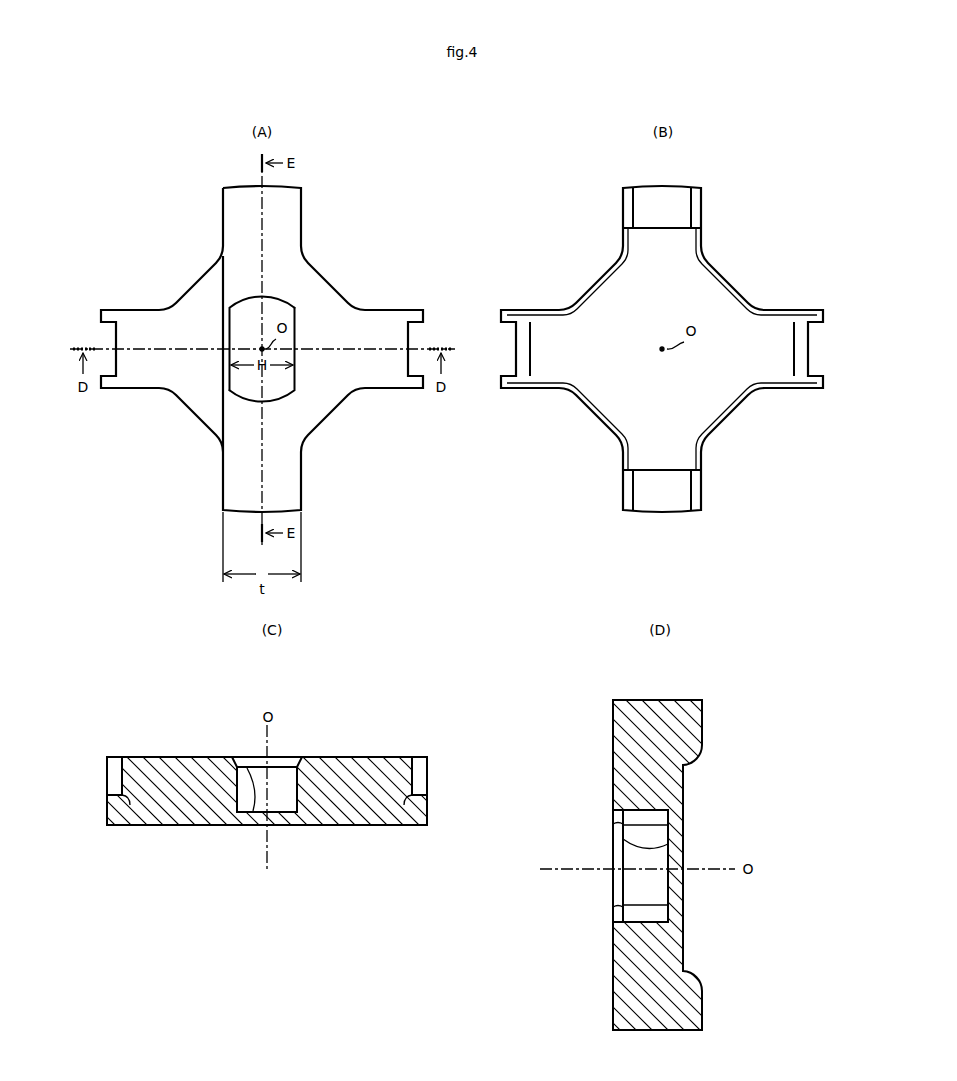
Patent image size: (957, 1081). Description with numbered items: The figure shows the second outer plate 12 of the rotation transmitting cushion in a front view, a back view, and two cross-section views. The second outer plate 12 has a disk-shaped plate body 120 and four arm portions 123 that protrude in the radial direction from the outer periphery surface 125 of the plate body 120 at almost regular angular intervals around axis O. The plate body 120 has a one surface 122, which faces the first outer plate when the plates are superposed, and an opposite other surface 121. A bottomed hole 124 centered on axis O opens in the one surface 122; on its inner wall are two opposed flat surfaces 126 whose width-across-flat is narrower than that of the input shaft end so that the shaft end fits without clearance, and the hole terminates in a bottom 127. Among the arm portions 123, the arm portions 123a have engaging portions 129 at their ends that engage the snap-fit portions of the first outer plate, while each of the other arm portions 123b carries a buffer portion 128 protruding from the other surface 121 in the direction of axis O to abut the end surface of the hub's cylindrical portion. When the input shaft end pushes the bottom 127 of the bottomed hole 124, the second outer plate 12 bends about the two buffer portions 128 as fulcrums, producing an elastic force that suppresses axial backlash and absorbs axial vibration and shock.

The second outer plate 12 is at (399, 150).
The plate body 120 is at (320, 276).
The other surface 121 is at (598, 289).
The one surface 122 is at (203, 281).
The arm portions 123 is at (303, 200).
The arm portions (with engaging portions) 123a is at (132, 310).
The arm portions (with buffer portions) 123b is at (223, 212).
The bottomed hole 124 is at (268, 384).
The outer periphery surface 125 is at (181, 403).
The flat surfaces 126 is at (296, 308).
The bottom 127 is at (249, 769).
The buffer portion 128 is at (656, 195).
The engaging portions 129 is at (114, 337).